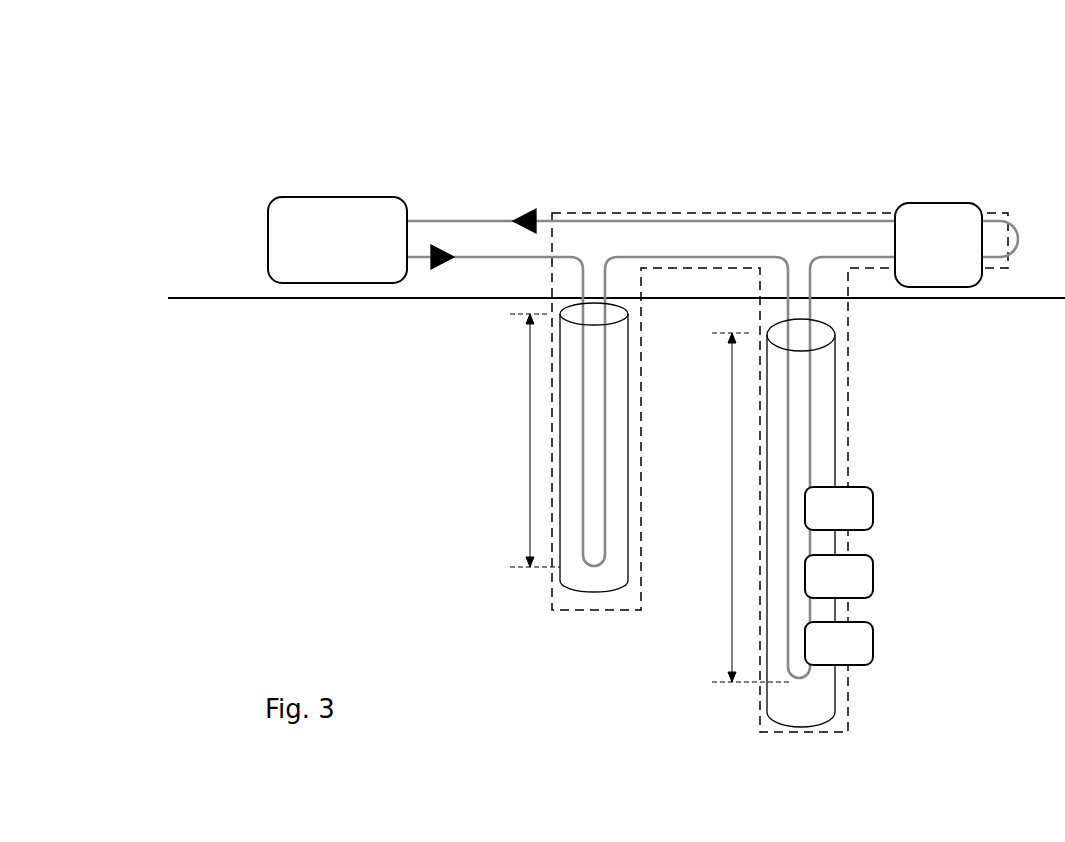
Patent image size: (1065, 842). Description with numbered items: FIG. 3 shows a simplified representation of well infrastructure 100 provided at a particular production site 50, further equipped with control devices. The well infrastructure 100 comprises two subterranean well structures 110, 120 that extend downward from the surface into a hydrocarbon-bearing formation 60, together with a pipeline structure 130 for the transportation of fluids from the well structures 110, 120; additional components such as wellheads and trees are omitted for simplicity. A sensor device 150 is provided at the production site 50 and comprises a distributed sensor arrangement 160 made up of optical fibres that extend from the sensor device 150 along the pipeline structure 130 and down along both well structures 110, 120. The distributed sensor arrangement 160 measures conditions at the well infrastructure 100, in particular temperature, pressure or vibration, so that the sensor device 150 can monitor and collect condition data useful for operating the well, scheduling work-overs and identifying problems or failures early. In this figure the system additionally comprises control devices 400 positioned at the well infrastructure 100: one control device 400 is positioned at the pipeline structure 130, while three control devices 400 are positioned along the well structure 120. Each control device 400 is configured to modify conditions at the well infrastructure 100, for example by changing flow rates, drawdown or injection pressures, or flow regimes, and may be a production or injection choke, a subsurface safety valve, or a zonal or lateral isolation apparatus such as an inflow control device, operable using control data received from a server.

The production site 50 is at (208, 297).
The hydrocarbon-bearing formation 60 is at (655, 668).
The well infrastructure 100 is at (778, 154).
The well structure 110 is at (553, 513).
The well structure 120 is at (765, 447).
The pipeline structure 130 is at (848, 213).
The sensor device 150 is at (337, 240).
The distributed sensor arrangement 160 is at (470, 221).
The control device 400 is at (949, 203).